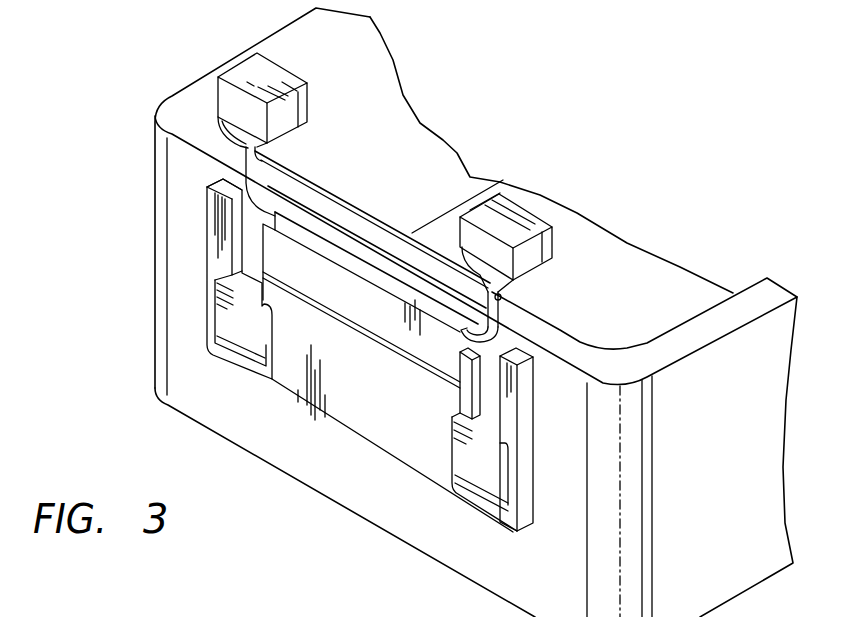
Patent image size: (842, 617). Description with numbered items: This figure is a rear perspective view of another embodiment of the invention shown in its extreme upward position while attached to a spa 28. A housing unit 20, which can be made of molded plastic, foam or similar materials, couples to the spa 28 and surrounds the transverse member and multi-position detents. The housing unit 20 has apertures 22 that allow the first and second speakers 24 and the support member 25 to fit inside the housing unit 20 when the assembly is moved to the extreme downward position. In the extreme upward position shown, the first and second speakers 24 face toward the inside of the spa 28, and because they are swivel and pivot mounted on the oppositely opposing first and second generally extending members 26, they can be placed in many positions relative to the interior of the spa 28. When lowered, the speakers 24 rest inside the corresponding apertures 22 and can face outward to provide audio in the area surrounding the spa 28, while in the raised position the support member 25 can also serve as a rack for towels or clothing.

The housing unit 20 is at (353, 427).
The apertures 22 is at (265, 352).
The first and second speakers 24 is at (238, 72).
The support member 25 is at (327, 190).
The first and second generally extending members 26 is at (502, 315).
The spa 28 is at (660, 309).